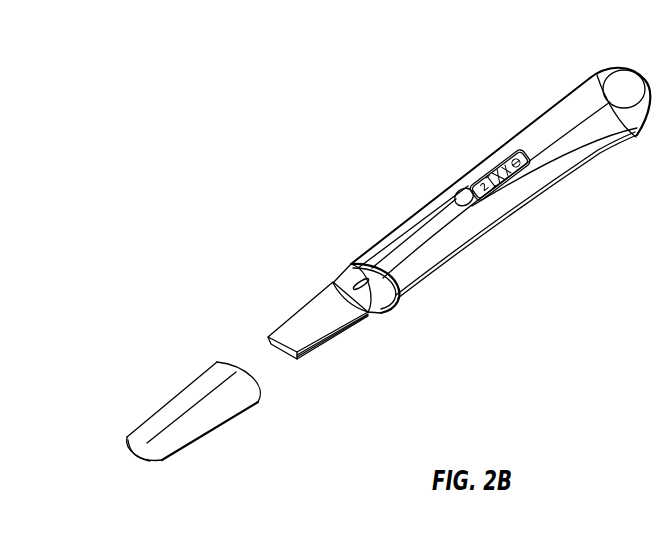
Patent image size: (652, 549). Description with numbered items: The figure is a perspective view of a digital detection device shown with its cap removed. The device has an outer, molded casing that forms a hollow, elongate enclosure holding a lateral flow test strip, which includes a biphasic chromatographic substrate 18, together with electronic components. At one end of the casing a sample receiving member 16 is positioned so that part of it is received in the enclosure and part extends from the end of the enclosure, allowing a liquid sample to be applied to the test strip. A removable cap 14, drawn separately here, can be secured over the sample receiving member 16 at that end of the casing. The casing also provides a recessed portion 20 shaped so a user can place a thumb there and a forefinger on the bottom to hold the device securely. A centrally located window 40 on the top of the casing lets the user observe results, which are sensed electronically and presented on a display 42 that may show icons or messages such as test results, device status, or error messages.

The removable cap 14 is at (197, 393).
The sample receiving member 16 is at (298, 325).
The biphasic chromatographic substrate 18 is at (456, 236).
The recessed portion 20 is at (601, 90).
The window 40 is at (473, 178).
The display 42 is at (503, 155).